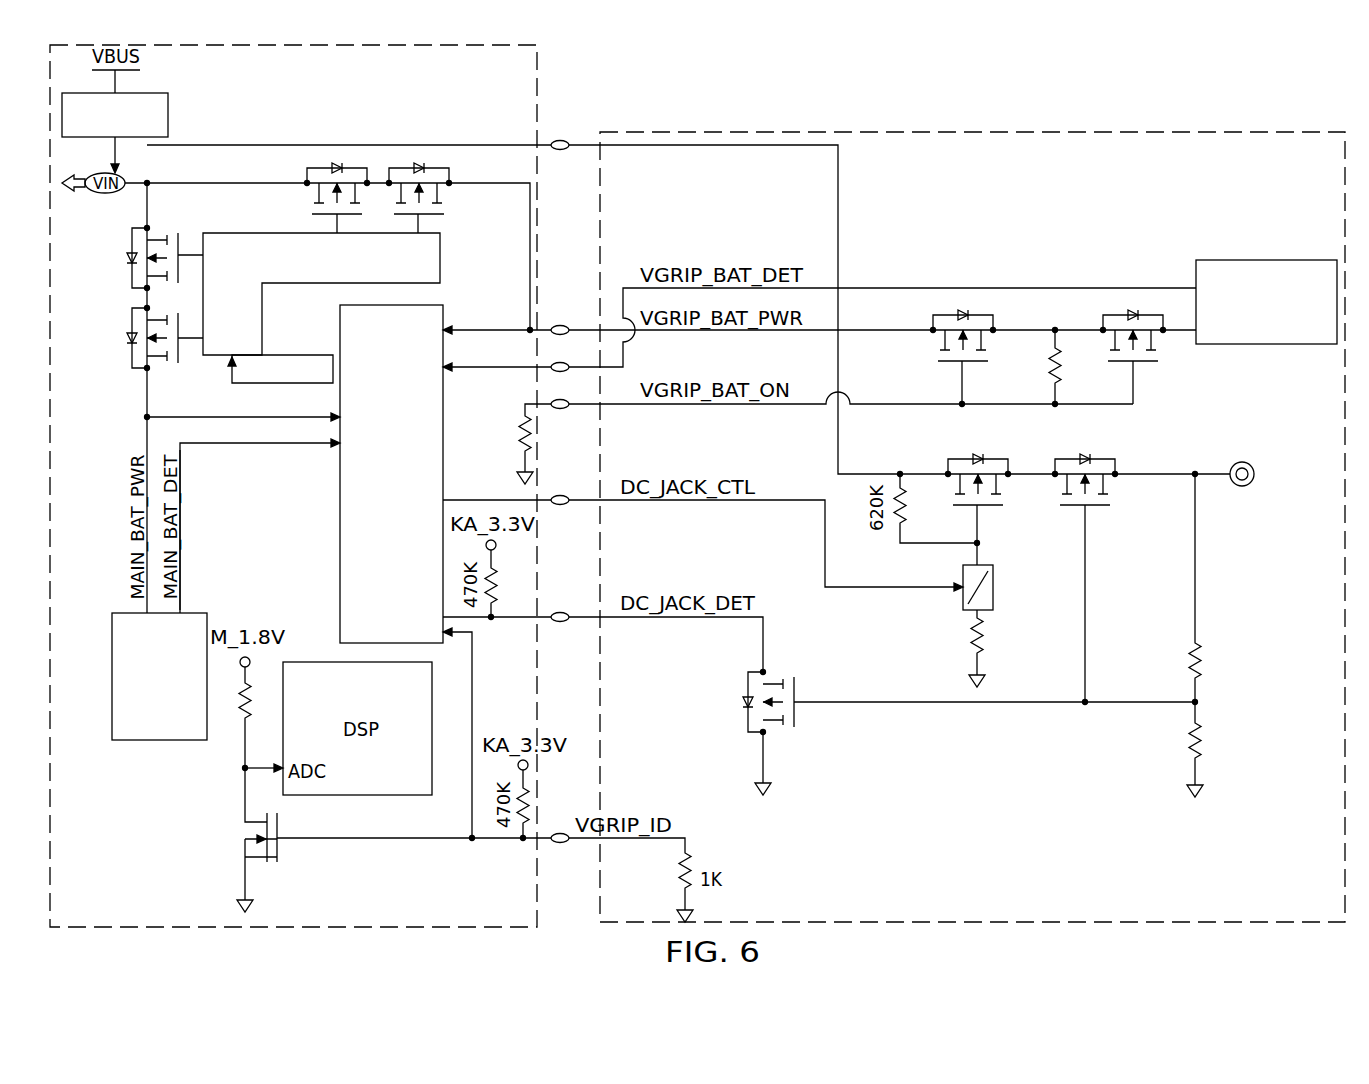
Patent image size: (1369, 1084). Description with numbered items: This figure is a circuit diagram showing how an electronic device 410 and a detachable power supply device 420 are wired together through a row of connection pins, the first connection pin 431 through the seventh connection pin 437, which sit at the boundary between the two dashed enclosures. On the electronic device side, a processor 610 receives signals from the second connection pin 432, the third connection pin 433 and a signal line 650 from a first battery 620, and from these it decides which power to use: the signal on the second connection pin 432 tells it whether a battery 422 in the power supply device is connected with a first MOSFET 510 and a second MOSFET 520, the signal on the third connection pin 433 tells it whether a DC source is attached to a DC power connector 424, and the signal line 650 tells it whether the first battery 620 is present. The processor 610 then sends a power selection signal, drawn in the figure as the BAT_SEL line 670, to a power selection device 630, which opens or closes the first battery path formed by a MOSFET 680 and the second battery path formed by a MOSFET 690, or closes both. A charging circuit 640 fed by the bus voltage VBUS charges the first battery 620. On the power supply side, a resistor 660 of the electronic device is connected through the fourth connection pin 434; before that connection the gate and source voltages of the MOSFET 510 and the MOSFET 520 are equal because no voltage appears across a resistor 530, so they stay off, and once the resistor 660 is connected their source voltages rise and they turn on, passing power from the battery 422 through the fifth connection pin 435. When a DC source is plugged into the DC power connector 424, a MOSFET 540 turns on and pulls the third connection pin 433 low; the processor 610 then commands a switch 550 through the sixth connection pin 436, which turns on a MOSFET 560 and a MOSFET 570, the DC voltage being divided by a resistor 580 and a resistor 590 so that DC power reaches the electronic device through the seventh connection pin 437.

The electronic device 410 is at (537, 82).
The power supply device 420 is at (975, 130).
The battery 422 is at (1258, 260).
The DC power connector 424 is at (1244, 460).
The first connection pin 431 is at (572, 848).
The second connection pin 432 is at (573, 357).
The third connection pin 433 is at (576, 624).
The fourth connection pin 434 is at (576, 410).
The fifth connection pin 435 is at (560, 316).
The sixth connection pin 436 is at (576, 507).
The seventh connection pin 437 is at (571, 151).
The first MOSFET 510 is at (963, 295).
The second MOSFET 520 is at (1135, 295).
The resistor 530 is at (1078, 380).
The MOSFET 540 is at (804, 732).
The switch 550 is at (1004, 619).
The MOSFET 560 is at (931, 453).
The MOSFET 570 is at (1118, 504).
The resistor 580 is at (1219, 656).
The resistor 590 is at (1219, 736).
The processor 610 is at (340, 578).
The first battery 620 is at (160, 740).
The power selection device 630 is at (285, 225).
The charging circuit 640 is at (166, 92).
The signal line 650 is at (180, 530).
The resistor 660 is at (511, 457).
The battery selection signal 670 is at (330, 378).
The MOSFET 680 is at (118, 260).
The MOSFET 690 is at (398, 155).